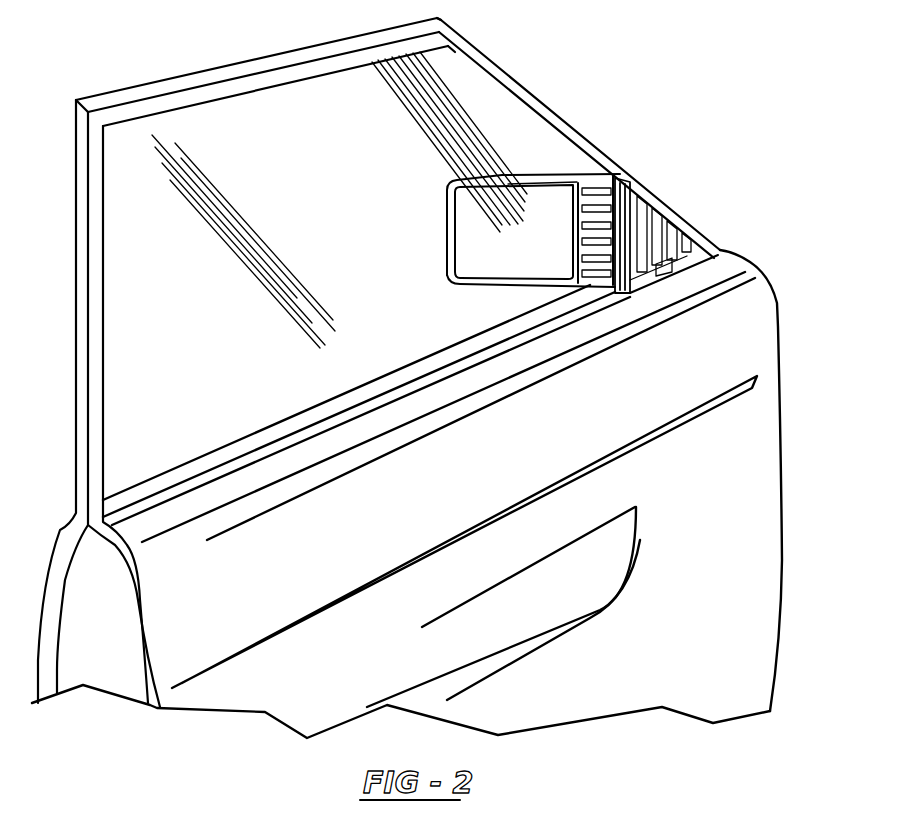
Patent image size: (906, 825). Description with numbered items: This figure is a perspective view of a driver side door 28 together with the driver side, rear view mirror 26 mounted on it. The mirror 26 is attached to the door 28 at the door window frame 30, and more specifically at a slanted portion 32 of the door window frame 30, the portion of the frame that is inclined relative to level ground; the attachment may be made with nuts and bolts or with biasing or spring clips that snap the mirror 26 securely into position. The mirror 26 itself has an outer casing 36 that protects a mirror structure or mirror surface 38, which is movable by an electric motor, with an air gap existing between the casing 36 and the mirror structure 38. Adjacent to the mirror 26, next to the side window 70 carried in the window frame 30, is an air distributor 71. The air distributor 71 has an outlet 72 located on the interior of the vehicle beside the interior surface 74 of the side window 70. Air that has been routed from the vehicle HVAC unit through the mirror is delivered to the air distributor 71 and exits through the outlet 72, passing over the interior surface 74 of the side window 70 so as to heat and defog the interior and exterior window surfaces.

The driver side rear view mirror 26 is at (339, 211).
The driver side door 28 is at (778, 327).
The door window frame 30 is at (358, 34).
The slanted portion 32 is at (503, 74).
The outer casing 36 is at (545, 175).
The mirror surface 38 is at (552, 246).
The side window 70 is at (177, 296).
The air distributor 71 is at (682, 222).
The outlet 72 is at (626, 197).
The interior surface 74 is at (227, 368).